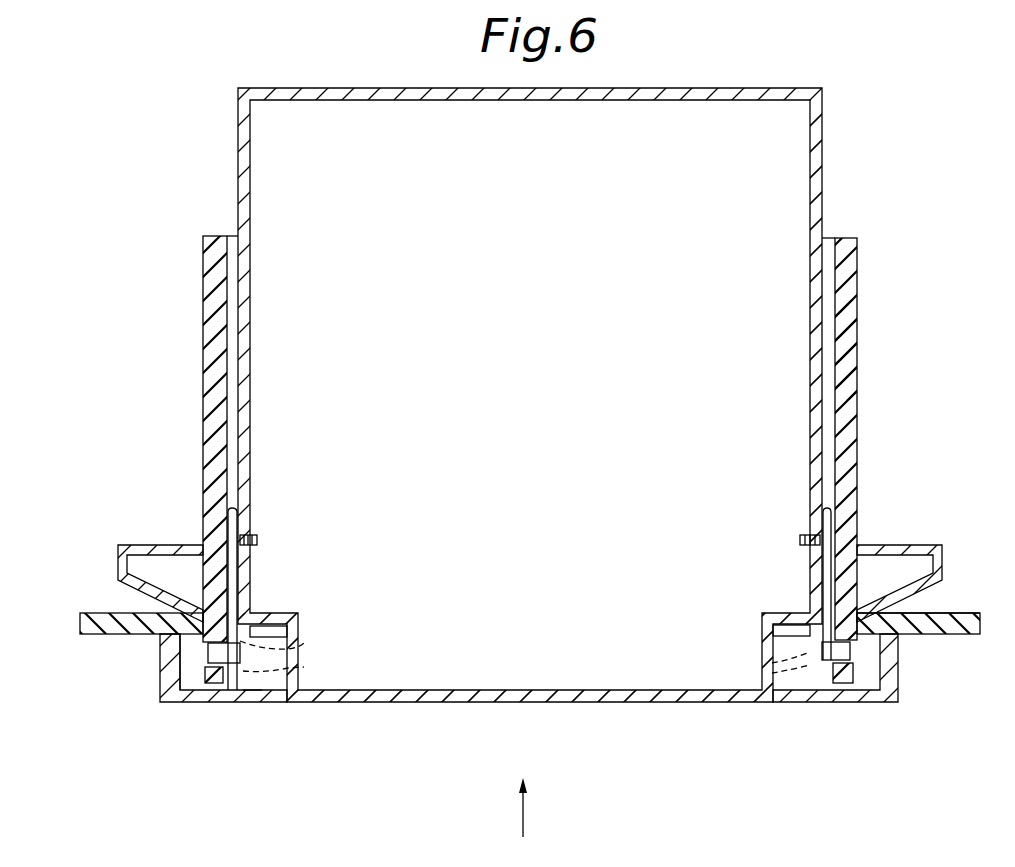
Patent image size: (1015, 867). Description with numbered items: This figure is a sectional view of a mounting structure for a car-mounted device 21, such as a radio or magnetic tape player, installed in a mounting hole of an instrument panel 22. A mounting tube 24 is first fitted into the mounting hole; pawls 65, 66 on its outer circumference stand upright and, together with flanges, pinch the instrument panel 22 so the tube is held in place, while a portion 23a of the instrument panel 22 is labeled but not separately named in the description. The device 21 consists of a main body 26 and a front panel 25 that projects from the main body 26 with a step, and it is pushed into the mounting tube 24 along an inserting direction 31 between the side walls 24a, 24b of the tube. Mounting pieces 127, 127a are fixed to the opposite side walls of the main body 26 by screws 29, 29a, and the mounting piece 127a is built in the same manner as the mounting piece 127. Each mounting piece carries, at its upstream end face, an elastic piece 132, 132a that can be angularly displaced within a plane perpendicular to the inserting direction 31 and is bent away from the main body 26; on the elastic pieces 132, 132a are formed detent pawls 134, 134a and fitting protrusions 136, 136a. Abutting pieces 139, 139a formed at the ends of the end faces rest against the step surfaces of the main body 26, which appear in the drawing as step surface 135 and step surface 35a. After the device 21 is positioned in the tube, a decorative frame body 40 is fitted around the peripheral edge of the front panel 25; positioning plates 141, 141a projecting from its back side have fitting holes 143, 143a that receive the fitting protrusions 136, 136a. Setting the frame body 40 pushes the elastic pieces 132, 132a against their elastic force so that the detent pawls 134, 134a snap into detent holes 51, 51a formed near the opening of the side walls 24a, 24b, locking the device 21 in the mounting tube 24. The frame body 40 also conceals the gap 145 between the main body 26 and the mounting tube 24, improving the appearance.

The car-mounted device 21 is at (797, 123).
The main body 26 is at (792, 187).
The front panel 25 is at (607, 695).
The mounting tube 24 is at (847, 287).
The side wall 24a is at (218, 379).
The side wall 24b is at (847, 338).
The mounting piece 127 is at (235, 577).
The mounting piece 127a is at (826, 590).
The screw 29 is at (257, 540).
The screw 29a is at (800, 538).
The pawl 65 is at (122, 542).
The pawl 66 is at (915, 548).
The instrument panel 22 is at (963, 622).
The upper surface of base plate 23a is at (927, 606).
The frame body 40 is at (168, 688).
The detent hole 51 is at (182, 643).
The detent hole 51a is at (898, 690).
The detent pawl 134 is at (200, 665).
The detent pawl 134a is at (850, 662).
The elastic piece 132 is at (220, 684).
The elastic piece 132a is at (840, 684).
The step portion 135 is at (298, 617).
The step portion 35a is at (762, 637).
The abutting piece 139 is at (298, 637).
The abutting piece 139a is at (760, 633).
The fitting protrusion 136 is at (302, 642).
The fitting protrusion 136a is at (762, 662).
The fitting hole 143 is at (302, 668).
The fitting hole 143a is at (762, 673).
The positioning plate 141 is at (283, 688).
The positioning plate 141a is at (788, 690).
The gap 145 is at (248, 697).
The inserting direction 31 is at (528, 805).